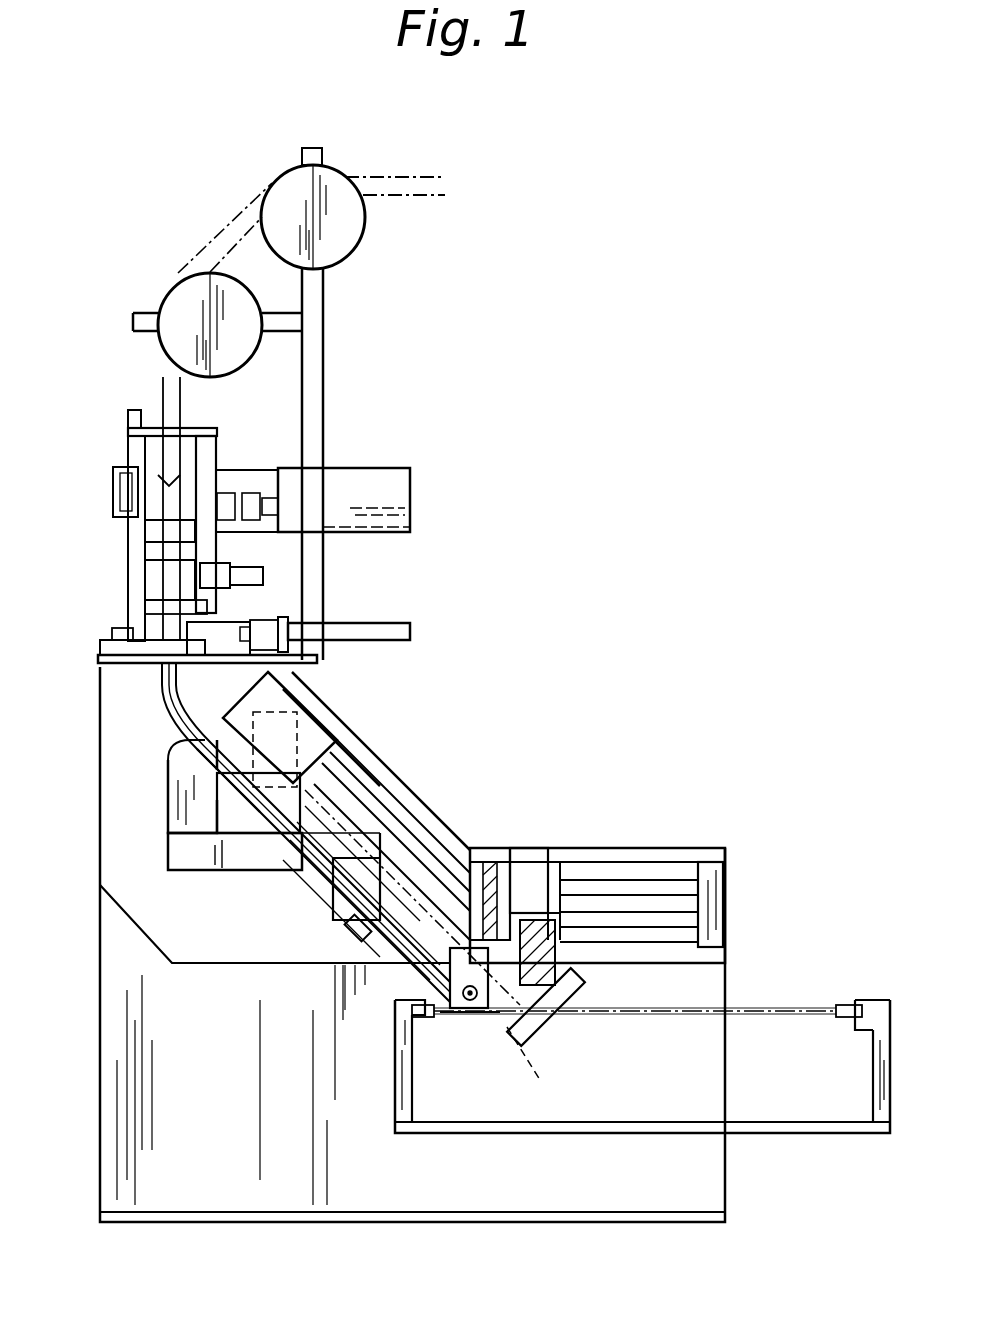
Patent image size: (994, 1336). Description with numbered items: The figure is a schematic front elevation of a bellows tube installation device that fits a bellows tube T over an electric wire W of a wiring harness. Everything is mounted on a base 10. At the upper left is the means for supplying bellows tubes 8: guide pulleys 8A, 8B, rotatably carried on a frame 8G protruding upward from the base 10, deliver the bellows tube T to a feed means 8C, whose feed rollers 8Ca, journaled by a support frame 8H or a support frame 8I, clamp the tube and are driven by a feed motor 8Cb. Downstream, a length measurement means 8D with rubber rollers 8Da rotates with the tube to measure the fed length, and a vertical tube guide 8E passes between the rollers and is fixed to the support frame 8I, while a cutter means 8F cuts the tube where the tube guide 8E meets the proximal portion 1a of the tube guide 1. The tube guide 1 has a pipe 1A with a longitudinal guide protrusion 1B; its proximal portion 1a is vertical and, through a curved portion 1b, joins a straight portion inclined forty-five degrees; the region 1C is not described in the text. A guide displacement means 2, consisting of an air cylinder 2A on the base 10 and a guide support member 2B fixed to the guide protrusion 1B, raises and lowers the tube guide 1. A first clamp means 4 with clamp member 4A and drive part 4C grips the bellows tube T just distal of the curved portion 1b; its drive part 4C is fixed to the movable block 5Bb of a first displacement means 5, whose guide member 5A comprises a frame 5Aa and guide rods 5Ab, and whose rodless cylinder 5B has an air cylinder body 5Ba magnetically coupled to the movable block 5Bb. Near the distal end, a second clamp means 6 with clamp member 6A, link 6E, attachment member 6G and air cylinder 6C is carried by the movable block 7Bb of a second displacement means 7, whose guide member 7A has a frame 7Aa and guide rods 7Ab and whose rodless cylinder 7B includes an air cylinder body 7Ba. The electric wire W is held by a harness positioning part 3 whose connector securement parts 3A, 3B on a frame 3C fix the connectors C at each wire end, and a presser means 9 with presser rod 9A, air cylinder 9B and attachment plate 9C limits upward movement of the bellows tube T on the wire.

The tube guide 1 is at (104, 650).
The proximal portion 1a is at (160, 689).
The curved portion 1b is at (180, 700).
The pipe 1A is at (320, 872).
The guide protrusion 1B is at (285, 852).
The frame portion 1C is at (355, 946).
The guide displacement means 2 is at (208, 833).
The air cylinder 2A is at (237, 776).
The guide support member 2B is at (169, 855).
The harness positioning part 3 is at (614, 1068).
The connector securement part 3A is at (863, 1003).
The connector securement part 3B is at (402, 1013).
The frame 3C is at (763, 1136).
The first clamp means 4 is at (126, 777).
The clamp member 4A is at (200, 765).
The drive part 4C is at (172, 725).
The first displacement means 5 is at (396, 822).
The guide member 5A is at (360, 774).
The frame 5Aa is at (327, 707).
The guide rods 5Ab is at (347, 762).
The rodless cylinder 5B is at (408, 862).
The air cylinder body 5Ba is at (335, 795).
The movable block 5Bb is at (380, 808).
The second clamp means 6 is at (604, 997).
The clamp member 6A is at (547, 1011).
The air cylinder 6C is at (522, 872).
The link 6E is at (563, 1008).
The attachment member 6G is at (550, 946).
The second displacement means 7 is at (639, 846).
The guide member 7A is at (677, 818).
The frame 7Aa is at (684, 874).
The guide rods 7Ab is at (688, 926).
The rodless cylinder 7B is at (576, 838).
The air cylinder body 7Ba is at (592, 862).
The movable block 7Bb is at (560, 870).
The means for supplying bellows tubes 8 is at (261, 387).
The guide pulley 8A is at (292, 184).
The guide pulley 8B is at (184, 274).
The feed means 8C is at (340, 466).
The feed roller 8Ca is at (125, 478).
The feed motor 8Cb is at (404, 474).
The length measurement means 8D is at (268, 577).
The rubber roller 8Da is at (150, 540).
The tube guide 8E is at (148, 430).
The cutter means 8F is at (388, 626).
The frame 8G is at (325, 324).
The support frame 8H is at (148, 571).
The support frame 8I is at (206, 447).
The presser means 9 is at (411, 1065).
The presser rod 9A is at (476, 1012).
The air cylinder 9B is at (531, 1069).
The attachment plate 9C is at (490, 1014).
The base 10 is at (100, 1108).
The bellows tube T is at (366, 192).
The electric wire W is at (745, 1005).
The connector C is at (435, 1020).